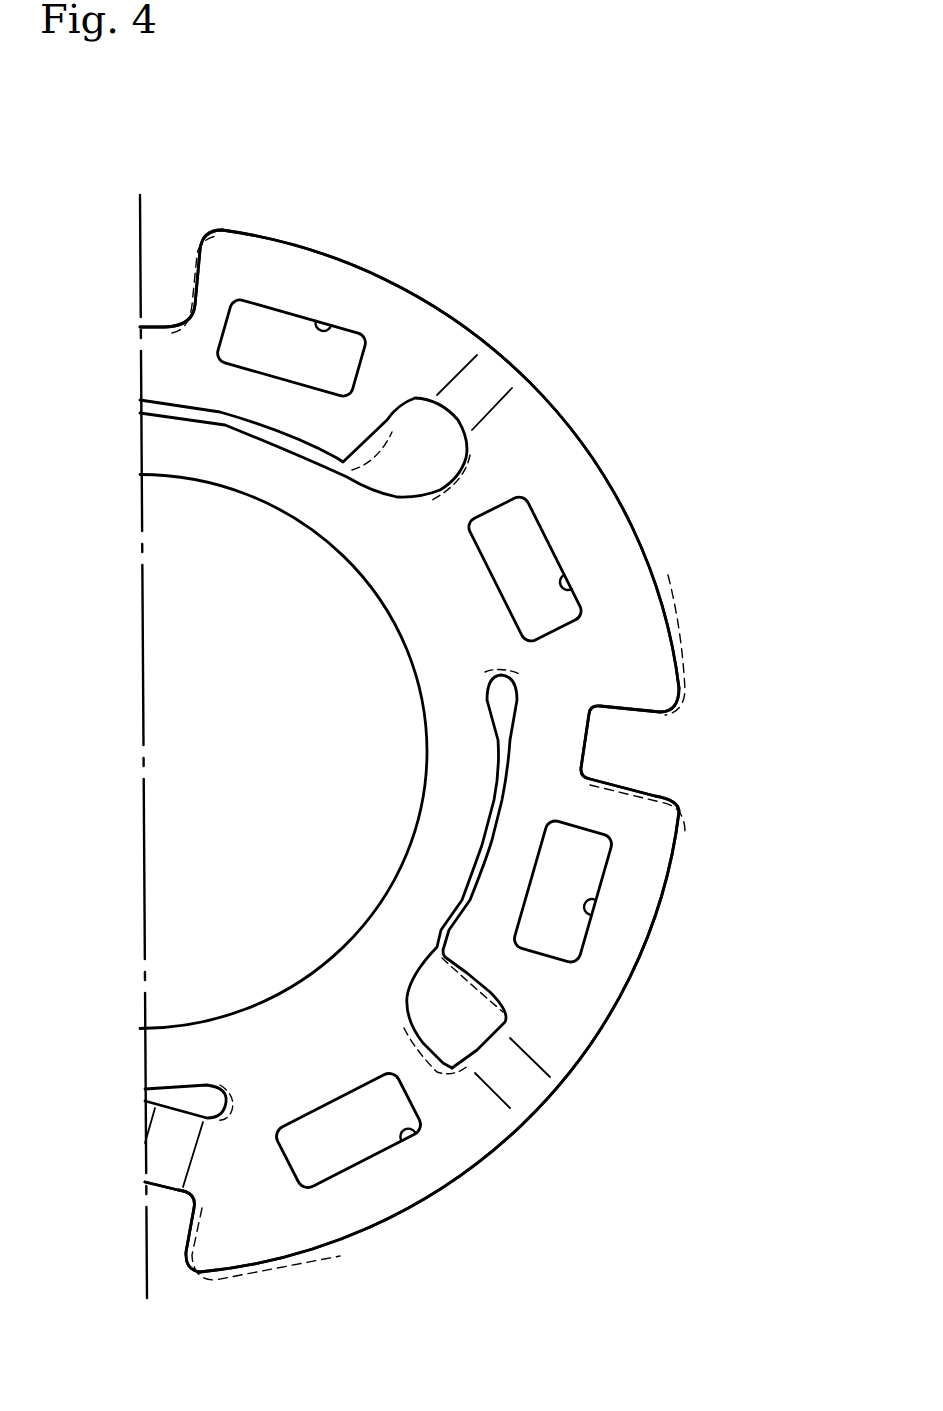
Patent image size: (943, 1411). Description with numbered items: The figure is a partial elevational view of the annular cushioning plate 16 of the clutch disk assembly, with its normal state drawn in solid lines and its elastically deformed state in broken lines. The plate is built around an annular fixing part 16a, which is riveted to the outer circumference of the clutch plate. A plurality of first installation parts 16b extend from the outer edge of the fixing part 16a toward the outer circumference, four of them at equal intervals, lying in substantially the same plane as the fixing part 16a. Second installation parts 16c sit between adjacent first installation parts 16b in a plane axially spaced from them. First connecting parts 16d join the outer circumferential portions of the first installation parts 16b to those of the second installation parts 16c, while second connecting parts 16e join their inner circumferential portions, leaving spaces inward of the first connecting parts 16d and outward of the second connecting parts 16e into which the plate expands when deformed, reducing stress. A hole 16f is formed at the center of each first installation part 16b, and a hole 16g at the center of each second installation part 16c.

The cushioning plate 16 is at (451, 245).
The fixing part 16a is at (442, 745).
The first installation parts 16b is at (585, 493).
The second installation parts 16c is at (273, 256).
The first connecting parts 16d is at (497, 370).
The second connecting parts 16e is at (568, 732).
The hole 16f is at (572, 580).
The hole 16g is at (323, 316).